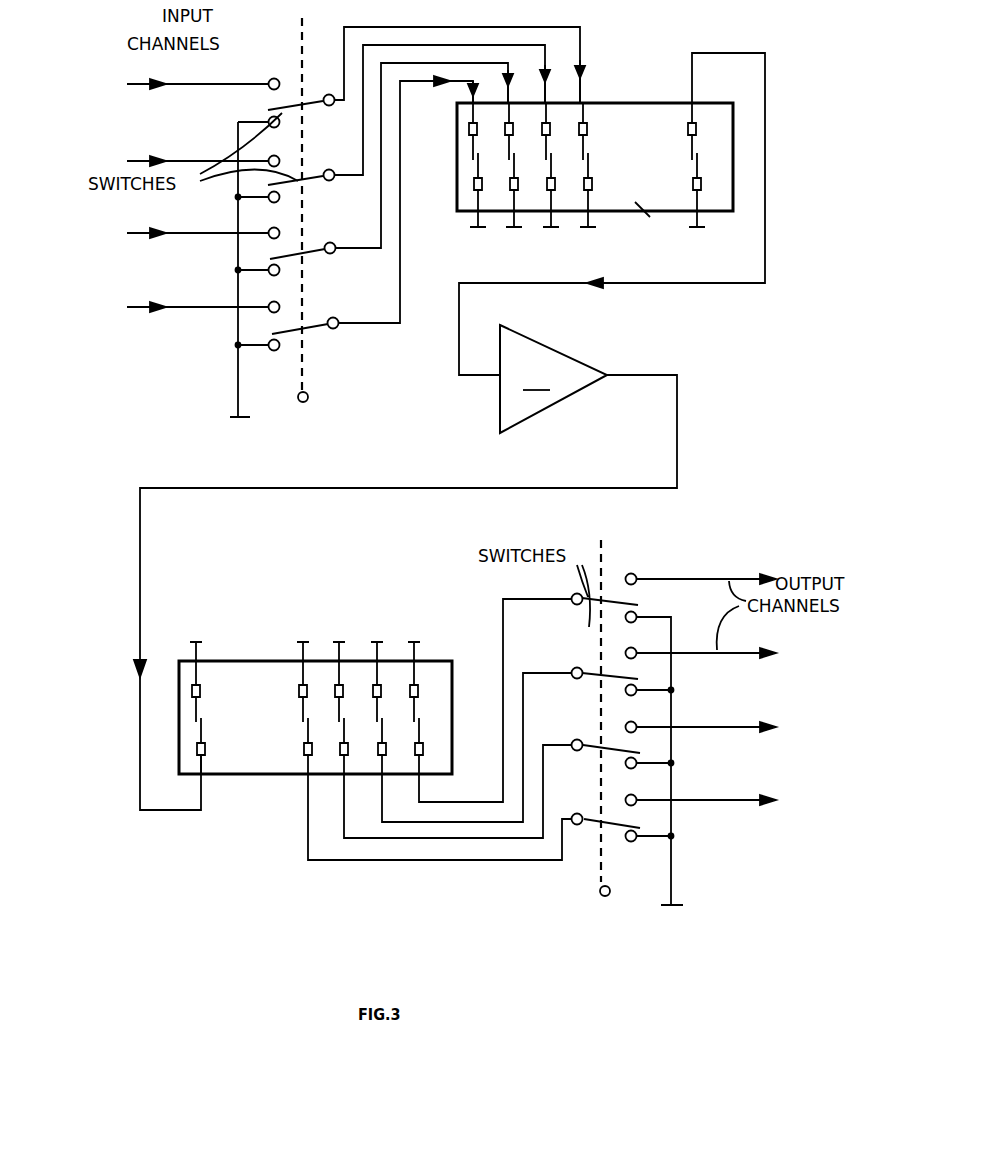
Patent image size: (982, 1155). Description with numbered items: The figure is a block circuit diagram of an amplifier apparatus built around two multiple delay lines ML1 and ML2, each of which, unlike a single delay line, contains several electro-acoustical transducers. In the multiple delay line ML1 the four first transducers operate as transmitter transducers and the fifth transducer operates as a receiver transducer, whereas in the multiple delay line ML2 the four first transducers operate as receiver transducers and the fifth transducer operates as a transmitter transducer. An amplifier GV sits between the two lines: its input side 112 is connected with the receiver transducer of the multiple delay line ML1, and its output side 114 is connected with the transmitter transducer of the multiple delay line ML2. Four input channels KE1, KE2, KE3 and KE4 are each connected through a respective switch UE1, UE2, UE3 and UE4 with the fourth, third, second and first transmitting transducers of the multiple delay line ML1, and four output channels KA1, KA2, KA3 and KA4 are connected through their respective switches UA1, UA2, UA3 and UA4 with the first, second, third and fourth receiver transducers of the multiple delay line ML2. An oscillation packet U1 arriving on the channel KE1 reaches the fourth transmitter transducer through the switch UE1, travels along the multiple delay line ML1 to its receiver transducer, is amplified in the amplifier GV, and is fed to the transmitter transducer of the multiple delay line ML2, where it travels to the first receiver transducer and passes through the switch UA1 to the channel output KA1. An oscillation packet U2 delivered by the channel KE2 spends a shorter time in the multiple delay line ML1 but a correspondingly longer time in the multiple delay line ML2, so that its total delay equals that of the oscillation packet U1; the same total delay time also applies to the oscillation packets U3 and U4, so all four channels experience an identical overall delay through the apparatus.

The input side 112 is at (484, 378).
The output side 114 is at (610, 372).
The amplifier GV is at (553, 379).
The multiple delay line ML1 is at (610, 188).
The multiple delay line ML2 is at (315, 685).
The input channel KE1 is at (203, 75).
The input channel KE2 is at (203, 151).
The input channel KE3 is at (203, 223).
The input channel KE4 is at (203, 298).
The switch UE1 is at (426, 82).
The switch UE2 is at (409, 129).
The switch UE3 is at (391, 174).
The switch UE4 is at (375, 218).
The oscillation packet U1 is at (596, 81).
The oscillation packet U2 is at (560, 84).
The oscillation packet U3 is at (522, 86).
The oscillation packet U4 is at (447, 98).
The switch UA1 is at (585, 589).
The switch UA2 is at (585, 663).
The switch UA3 is at (586, 735).
The switch UA4 is at (596, 812).
The output channel KA1 is at (701, 566).
The output channel KA2 is at (701, 640).
The output channel KA3 is at (701, 715).
The output channel KA4 is at (701, 788).